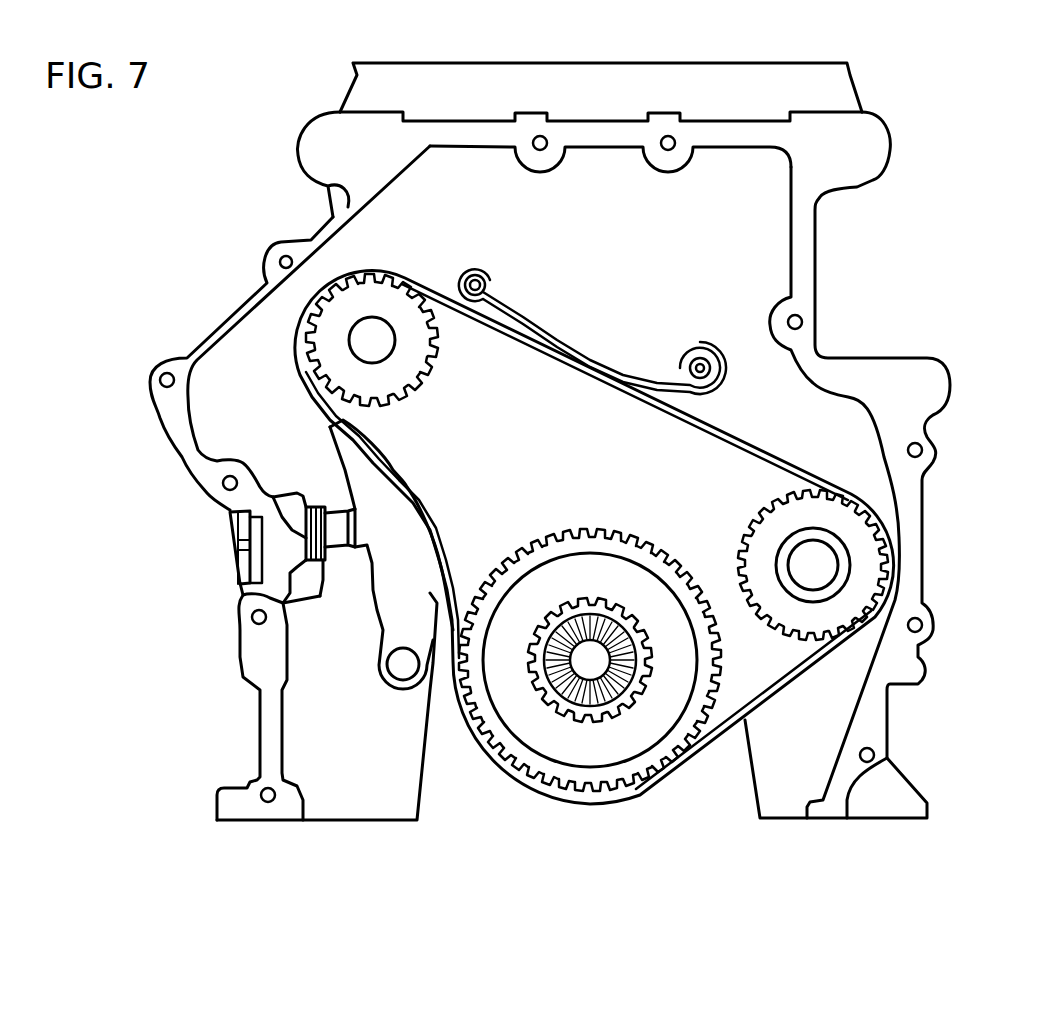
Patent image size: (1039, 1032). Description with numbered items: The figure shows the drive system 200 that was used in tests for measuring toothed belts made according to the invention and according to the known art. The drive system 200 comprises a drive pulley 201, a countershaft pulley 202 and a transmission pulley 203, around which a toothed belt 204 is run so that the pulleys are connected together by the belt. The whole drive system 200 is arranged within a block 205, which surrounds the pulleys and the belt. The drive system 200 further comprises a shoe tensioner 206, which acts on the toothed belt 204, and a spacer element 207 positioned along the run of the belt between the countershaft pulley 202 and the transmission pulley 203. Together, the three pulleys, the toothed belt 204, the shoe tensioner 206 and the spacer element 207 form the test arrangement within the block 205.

The drive system 200 is at (570, 311).
The drive pulley 201 is at (540, 740).
The countershaft pulley 202 is at (333, 320).
The transmission pulley 203 is at (863, 565).
The toothed belt 204 is at (737, 440).
The block 205 is at (912, 375).
The shoe tensioner 206 is at (385, 623).
The spacer element 207 is at (505, 296).